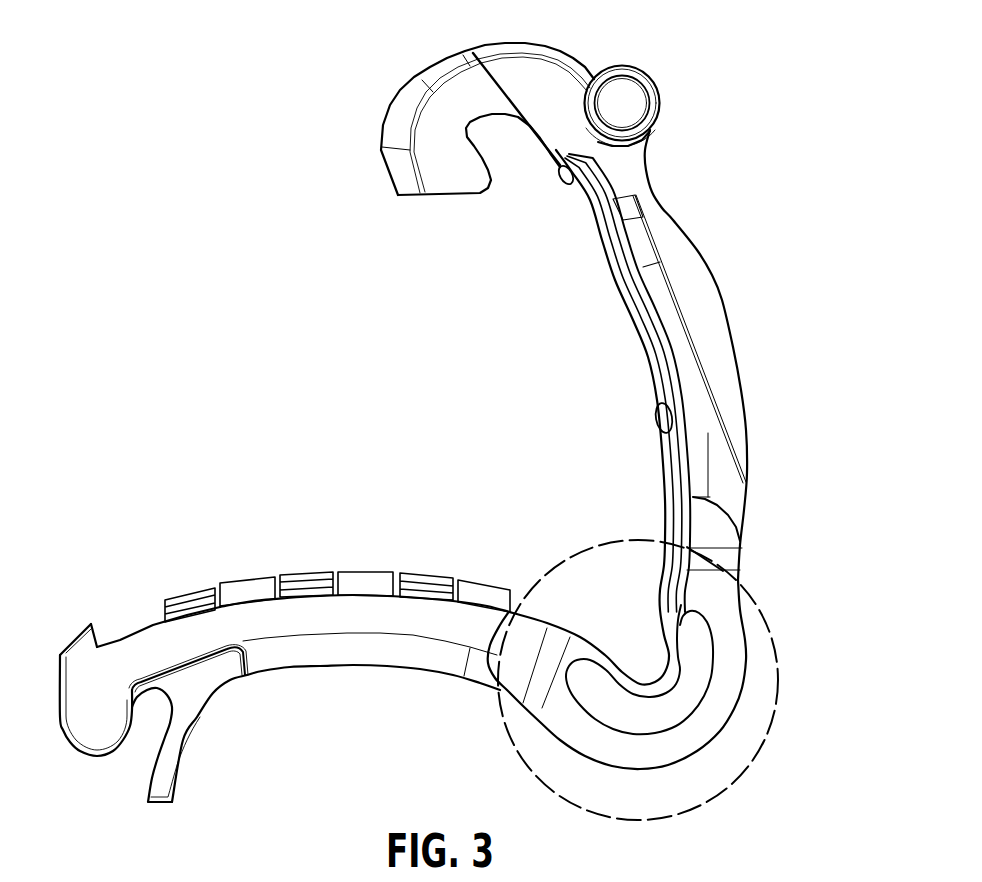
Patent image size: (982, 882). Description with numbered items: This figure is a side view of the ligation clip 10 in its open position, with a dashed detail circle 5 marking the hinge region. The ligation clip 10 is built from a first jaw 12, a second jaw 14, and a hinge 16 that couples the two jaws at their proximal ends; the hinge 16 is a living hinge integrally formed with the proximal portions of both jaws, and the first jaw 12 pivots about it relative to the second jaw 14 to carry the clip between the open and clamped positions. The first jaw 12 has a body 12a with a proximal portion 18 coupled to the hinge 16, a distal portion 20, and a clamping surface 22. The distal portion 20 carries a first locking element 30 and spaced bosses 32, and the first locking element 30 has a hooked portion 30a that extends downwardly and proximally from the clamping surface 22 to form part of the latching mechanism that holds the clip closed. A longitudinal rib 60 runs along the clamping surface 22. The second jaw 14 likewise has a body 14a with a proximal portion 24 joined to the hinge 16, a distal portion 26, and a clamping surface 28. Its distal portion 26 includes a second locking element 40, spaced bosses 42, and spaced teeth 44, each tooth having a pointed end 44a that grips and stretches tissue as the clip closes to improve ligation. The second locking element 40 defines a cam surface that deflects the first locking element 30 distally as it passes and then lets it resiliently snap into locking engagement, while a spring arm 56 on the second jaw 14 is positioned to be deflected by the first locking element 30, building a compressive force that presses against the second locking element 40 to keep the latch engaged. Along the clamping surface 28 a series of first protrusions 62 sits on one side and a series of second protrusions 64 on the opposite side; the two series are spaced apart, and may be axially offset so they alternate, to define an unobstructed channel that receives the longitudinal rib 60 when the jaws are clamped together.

The ligation clip 10 is at (799, 206).
The first jaw 12 is at (737, 342).
The body of the first jaw 12a is at (670, 240).
The second jaw 14 is at (333, 672).
The body of the second jaw 14a is at (297, 657).
The hinge 16 is at (722, 740).
The proximal portion of the first jaw 18 is at (720, 534).
The distal portion of the first jaw 20 is at (651, 135).
The clamping surface of the first jaw 22 is at (597, 180).
The proximal portion of the second jaw 24 is at (520, 677).
The distal portion of the second jaw 26 is at (257, 668).
The clamping surface of the second jaw 28 is at (153, 624).
The first locking element 30 is at (407, 123).
The hooked portion 30a is at (442, 180).
The spaced bosses 32 is at (617, 90).
The second locking element 40 is at (150, 709).
The spaced bosses 42 is at (87, 732).
The spaced teeth 44 is at (78, 633).
The pointed end 44a is at (95, 624).
The spring arm 56 is at (163, 792).
The longitudinal rib 60 is at (622, 293).
The first protrusions 62 is at (200, 590).
The second protrusions 64 is at (250, 583).
The detail view circle 5 is at (579, 553).